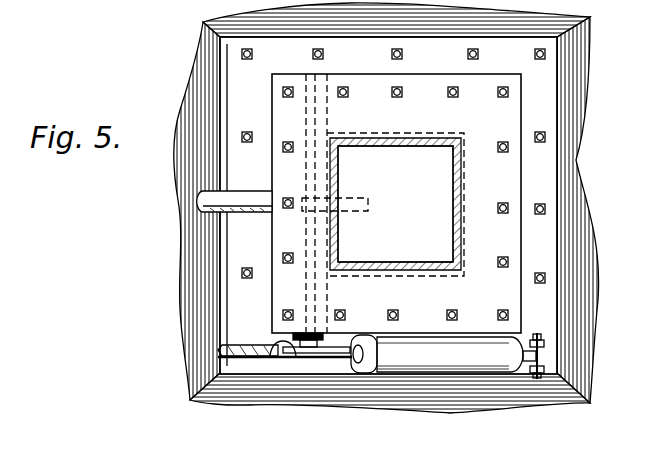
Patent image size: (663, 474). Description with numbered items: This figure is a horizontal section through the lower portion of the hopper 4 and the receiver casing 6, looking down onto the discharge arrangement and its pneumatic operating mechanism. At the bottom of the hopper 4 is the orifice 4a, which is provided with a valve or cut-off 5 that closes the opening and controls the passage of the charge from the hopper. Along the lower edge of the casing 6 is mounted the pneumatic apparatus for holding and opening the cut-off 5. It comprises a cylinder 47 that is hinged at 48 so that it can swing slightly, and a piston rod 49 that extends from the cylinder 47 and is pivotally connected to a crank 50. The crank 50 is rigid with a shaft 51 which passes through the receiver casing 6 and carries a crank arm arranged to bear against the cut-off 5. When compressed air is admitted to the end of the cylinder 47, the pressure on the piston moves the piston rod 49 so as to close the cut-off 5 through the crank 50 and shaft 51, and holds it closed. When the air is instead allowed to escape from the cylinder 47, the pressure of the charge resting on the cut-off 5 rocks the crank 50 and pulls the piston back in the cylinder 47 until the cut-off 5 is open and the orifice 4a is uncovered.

The hopper 4 is at (336, 232).
The orifice 4a is at (445, 191).
The cut-off 5 is at (333, 274).
The casing wall 6 is at (198, 262).
The cylinder 47 is at (500, 364).
The hinge 48 is at (544, 357).
The piston rod 49 is at (340, 358).
The crank 50 is at (272, 352).
The shaft 51 is at (305, 303).